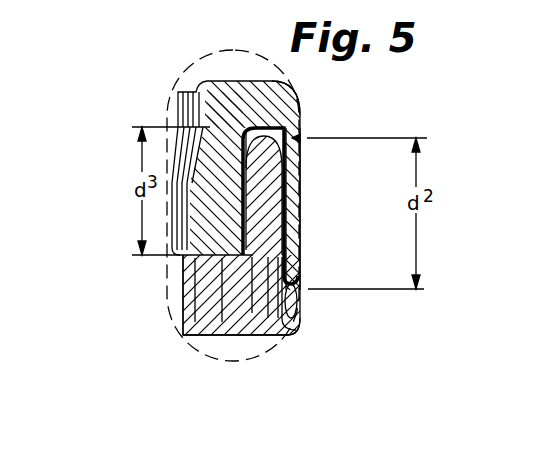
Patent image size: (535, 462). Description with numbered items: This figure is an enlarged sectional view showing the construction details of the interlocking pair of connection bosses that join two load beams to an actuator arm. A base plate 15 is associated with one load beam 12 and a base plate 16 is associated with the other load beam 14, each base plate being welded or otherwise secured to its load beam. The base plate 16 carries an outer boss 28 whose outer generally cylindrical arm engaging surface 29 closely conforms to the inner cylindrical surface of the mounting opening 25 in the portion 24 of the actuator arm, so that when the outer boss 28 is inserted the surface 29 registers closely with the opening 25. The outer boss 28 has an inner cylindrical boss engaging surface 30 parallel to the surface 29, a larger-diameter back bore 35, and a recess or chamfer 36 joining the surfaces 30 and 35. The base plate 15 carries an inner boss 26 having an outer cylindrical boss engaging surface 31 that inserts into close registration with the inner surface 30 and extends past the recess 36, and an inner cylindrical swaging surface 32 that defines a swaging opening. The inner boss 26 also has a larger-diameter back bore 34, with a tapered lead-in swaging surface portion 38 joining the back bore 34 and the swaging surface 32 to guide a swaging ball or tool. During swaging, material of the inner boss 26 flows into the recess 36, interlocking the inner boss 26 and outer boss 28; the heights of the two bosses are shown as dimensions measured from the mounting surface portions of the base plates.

The load beam 12 is at (300, 122).
The load beam 14 is at (290, 320).
The base plate 15 is at (286, 103).
The base plate 16 is at (288, 340).
The portion 24 is at (288, 210).
The mounting opening 25 is at (290, 157).
The inner boss 26 is at (192, 214).
The outer boss 28 is at (283, 250).
The arm engaging surface 29 is at (292, 189).
The boss engaging surface 30 is at (228, 150).
The boss engaging surface 31 is at (228, 150).
The swaging surface 32 is at (186, 229).
The back bore 34 is at (178, 93).
The back bore 35 is at (258, 258).
The recess 36 is at (258, 273).
The lead-in swaging surface portion 38 is at (176, 128).